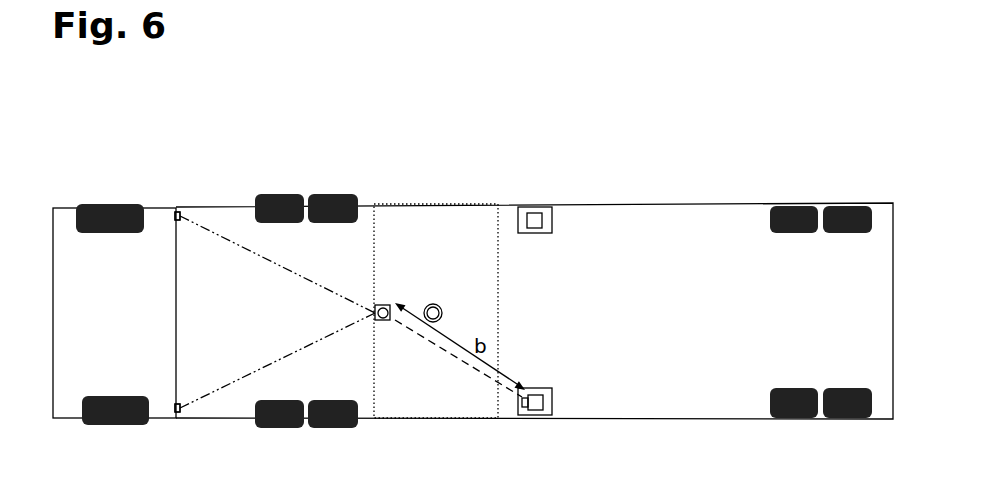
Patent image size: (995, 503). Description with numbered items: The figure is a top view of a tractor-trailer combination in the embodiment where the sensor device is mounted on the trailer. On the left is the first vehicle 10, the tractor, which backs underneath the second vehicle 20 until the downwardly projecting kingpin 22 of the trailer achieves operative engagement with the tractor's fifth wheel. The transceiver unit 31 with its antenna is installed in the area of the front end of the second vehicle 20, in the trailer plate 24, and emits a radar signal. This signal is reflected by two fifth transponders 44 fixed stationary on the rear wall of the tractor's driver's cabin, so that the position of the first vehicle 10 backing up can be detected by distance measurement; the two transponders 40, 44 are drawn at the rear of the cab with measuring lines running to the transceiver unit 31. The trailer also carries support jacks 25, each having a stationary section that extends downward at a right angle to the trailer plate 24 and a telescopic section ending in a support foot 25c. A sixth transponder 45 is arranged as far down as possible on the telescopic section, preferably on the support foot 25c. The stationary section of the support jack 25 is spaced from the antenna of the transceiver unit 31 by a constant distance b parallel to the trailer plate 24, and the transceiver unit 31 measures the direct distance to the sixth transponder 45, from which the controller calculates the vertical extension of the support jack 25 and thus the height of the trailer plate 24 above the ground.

The first vehicle 10 is at (123, 326).
The second vehicle 20 is at (867, 325).
The kingpin 22 is at (432, 303).
The trailer plate 24 is at (498, 247).
The support jack 25 is at (566, 222).
The support foot 25c is at (553, 207).
The transceiver unit 31 is at (388, 303).
The rear sensor 40 is at (178, 210).
The fifth transponder 44 is at (178, 210).
The sixth transponder 45 is at (522, 402).